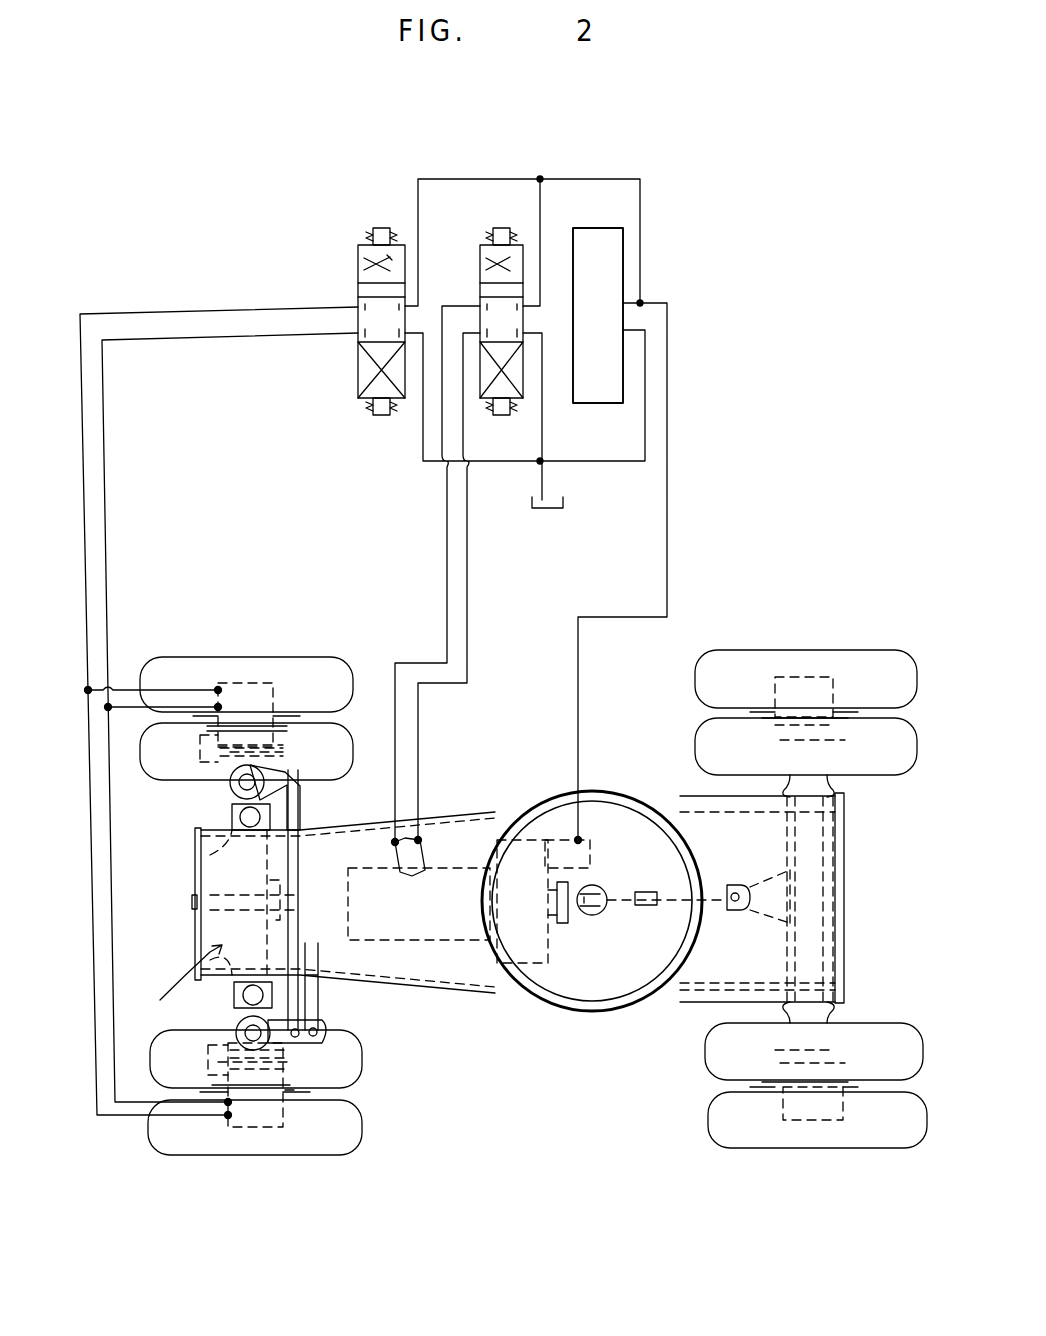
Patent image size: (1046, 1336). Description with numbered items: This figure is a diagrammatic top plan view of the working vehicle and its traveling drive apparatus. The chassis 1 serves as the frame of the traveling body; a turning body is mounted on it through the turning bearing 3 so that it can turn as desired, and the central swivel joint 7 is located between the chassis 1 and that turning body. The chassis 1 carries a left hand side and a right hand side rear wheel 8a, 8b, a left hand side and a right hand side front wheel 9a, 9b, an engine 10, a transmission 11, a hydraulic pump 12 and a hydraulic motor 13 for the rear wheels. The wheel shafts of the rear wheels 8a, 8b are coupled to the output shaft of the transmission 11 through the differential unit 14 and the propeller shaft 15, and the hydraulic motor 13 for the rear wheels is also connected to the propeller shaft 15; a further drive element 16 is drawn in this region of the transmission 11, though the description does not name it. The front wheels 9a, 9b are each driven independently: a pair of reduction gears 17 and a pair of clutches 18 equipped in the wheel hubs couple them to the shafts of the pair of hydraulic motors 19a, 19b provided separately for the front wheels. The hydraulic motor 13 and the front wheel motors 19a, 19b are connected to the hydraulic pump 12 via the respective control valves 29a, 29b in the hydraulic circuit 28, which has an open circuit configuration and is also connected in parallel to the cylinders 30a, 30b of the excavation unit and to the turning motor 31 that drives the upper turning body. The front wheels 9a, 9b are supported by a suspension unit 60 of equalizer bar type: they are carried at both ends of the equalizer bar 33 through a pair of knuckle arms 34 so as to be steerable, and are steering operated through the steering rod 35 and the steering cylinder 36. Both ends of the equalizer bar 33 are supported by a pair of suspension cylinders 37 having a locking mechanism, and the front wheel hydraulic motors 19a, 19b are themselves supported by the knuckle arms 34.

The chassis 1 is at (848, 820).
The turning bearing 3 is at (590, 1012).
The central swivel joint 7 is at (600, 890).
The left hand side rear wheel 8a is at (752, 1140).
The right hand side rear wheel 8b is at (862, 657).
The left hand side front wheel 9a is at (338, 1143).
The right hand side front wheel 9b is at (322, 657).
The engine 10 is at (460, 940).
The transmission 11 is at (530, 985).
The hydraulic pump 12 is at (585, 843).
The hydraulic motor for the rear wheels 13 is at (440, 830).
The differential unit 14 is at (845, 872).
The propeller shaft 15 is at (717, 912).
The clutch 16 is at (568, 925).
The reduction gears 17 is at (240, 683).
The clutches 18 is at (275, 742).
The hydraulic motor for the front wheel 19a is at (305, 1048).
The hydraulic motor for the front wheel 19b is at (283, 750).
The hydraulic circuit 28 is at (658, 186).
The control valve 29a is at (480, 250).
The control valve 29b is at (358, 250).
The cylinder 30a is at (623, 236).
The cylinder 30b is at (598, 315).
The turning motor 31 is at (598, 315).
The equalizer bar 33 is at (200, 935).
The knuckle arms 34 is at (232, 782).
The steering rod 35 is at (300, 798).
The steering cylinder 36 is at (325, 980).
The suspension cylinders 37 is at (240, 817).
The suspension unit of equalizer bar type 60 is at (174, 981).